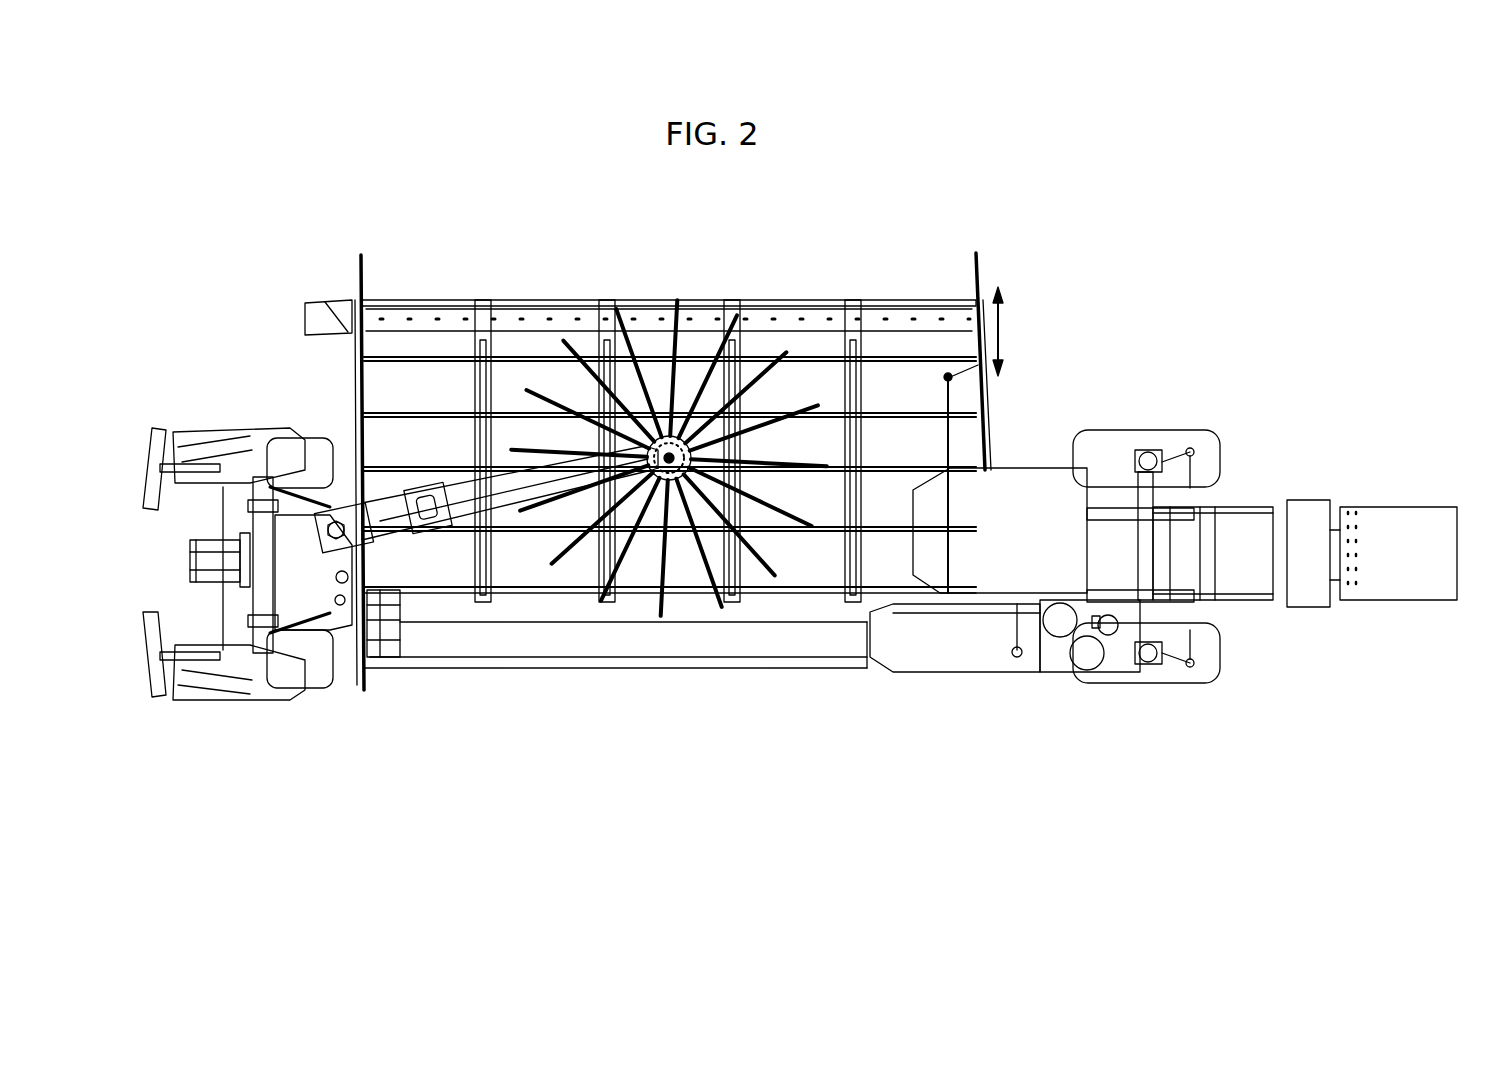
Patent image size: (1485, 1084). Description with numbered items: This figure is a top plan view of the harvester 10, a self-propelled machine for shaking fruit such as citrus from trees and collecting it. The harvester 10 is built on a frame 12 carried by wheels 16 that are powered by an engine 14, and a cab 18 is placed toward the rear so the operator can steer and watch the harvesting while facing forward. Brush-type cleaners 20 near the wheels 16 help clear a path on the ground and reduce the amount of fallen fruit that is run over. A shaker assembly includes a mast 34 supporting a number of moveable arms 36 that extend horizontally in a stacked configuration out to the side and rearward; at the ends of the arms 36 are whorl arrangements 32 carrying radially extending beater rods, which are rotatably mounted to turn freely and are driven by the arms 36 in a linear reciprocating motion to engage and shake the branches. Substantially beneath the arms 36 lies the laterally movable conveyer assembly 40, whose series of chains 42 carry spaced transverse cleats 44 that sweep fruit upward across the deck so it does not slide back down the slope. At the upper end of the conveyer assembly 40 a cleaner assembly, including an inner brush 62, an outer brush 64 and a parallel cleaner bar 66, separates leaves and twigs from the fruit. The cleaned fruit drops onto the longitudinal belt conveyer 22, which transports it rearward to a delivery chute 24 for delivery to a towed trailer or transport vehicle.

The harvester 10 is at (878, 232).
The frame 12 is at (290, 533).
The engine 14 is at (1037, 655).
The wheels 16 is at (292, 447).
The cab 18 is at (1040, 517).
The brush-type cleaners 20 is at (158, 470).
The longitudinal belt conveyer 22 is at (1243, 550).
The delivery chute 24 is at (1408, 532).
The whorl arrangements 32 is at (648, 471).
The mast 34 is at (334, 512).
The moveable arms 36 is at (715, 280).
The conveyer assembly 40 is at (1018, 312).
The chains 42 is at (655, 372).
The cleats 44 is at (424, 470).
The inner brush 62 is at (430, 612).
The outer brush 64 is at (505, 645).
The cleaner bar 66 is at (630, 668).